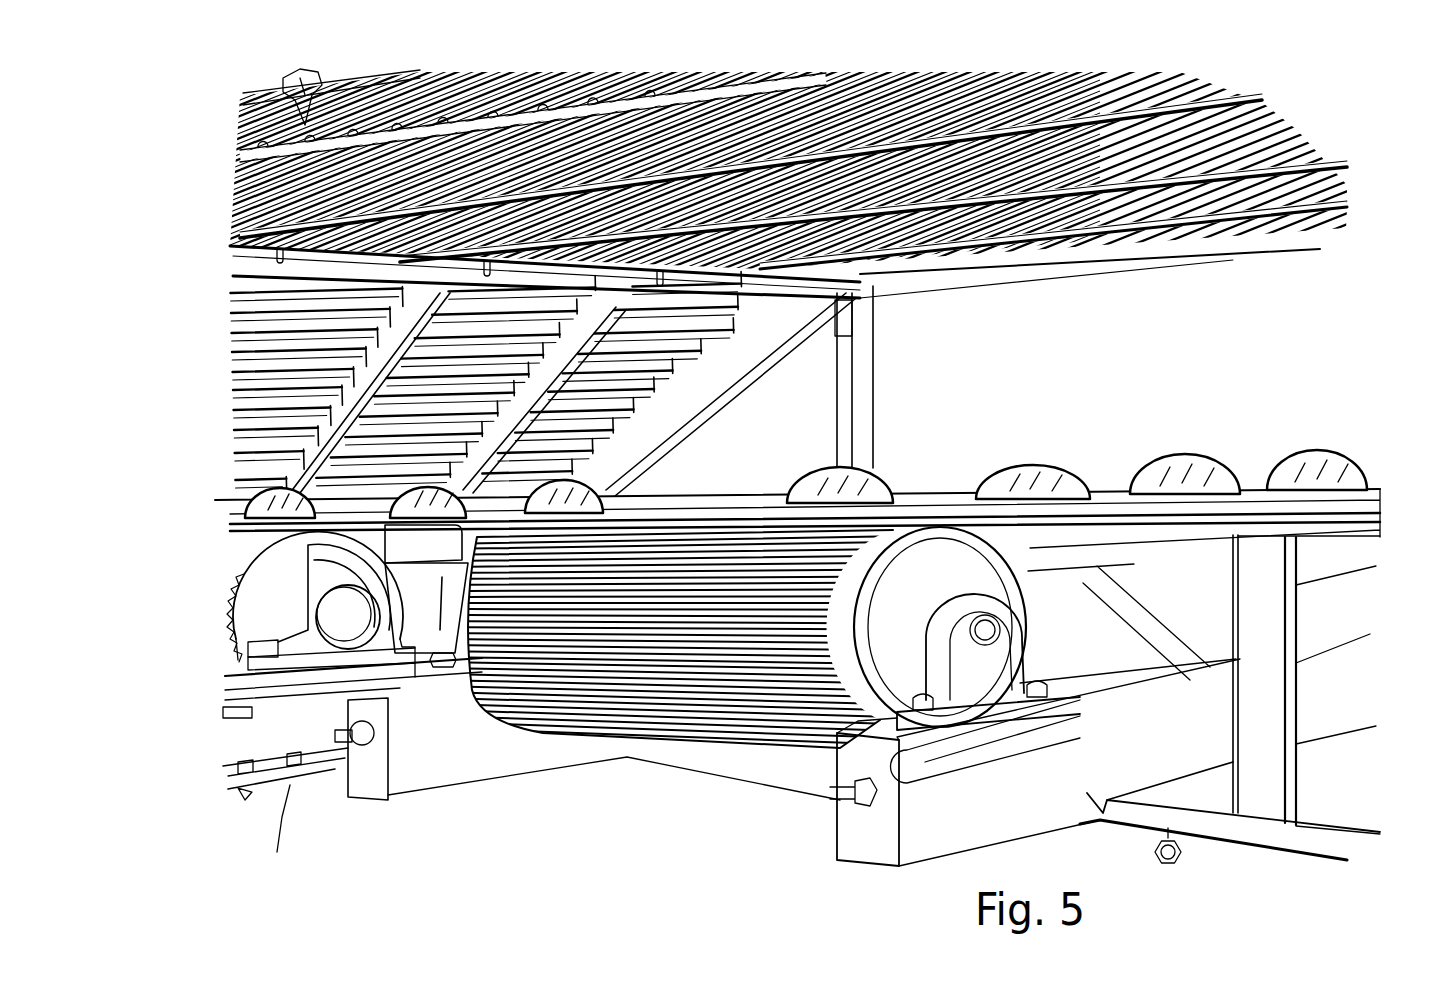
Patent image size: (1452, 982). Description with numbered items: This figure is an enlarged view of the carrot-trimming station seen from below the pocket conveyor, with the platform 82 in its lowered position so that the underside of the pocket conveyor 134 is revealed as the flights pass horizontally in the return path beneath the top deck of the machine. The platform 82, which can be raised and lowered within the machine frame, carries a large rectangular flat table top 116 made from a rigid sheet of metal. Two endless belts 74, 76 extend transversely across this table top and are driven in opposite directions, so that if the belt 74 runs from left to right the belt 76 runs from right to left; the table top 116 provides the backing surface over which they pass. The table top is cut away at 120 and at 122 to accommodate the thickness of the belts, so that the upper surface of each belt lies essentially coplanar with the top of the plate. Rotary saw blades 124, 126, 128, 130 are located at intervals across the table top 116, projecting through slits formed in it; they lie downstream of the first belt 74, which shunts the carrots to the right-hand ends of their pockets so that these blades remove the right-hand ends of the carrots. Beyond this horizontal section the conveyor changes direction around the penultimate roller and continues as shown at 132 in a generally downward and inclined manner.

The endless belt 74 is at (793, 683).
The endless belt 76 is at (227, 587).
The platform 82 is at (676, 792).
The table top 116 is at (1330, 490).
The cut-away 120 is at (1084, 537).
The cut-away 122 is at (447, 562).
The rotary saw blade 124 is at (1310, 460).
The rotary saw blade 126 is at (1207, 463).
The rotary saw blade 128 is at (1048, 467).
The rotary saw blade 130 is at (877, 482).
The conveyor flight path section 132 is at (650, 377).
The underside of the pocket conveyor 134 is at (1053, 250).